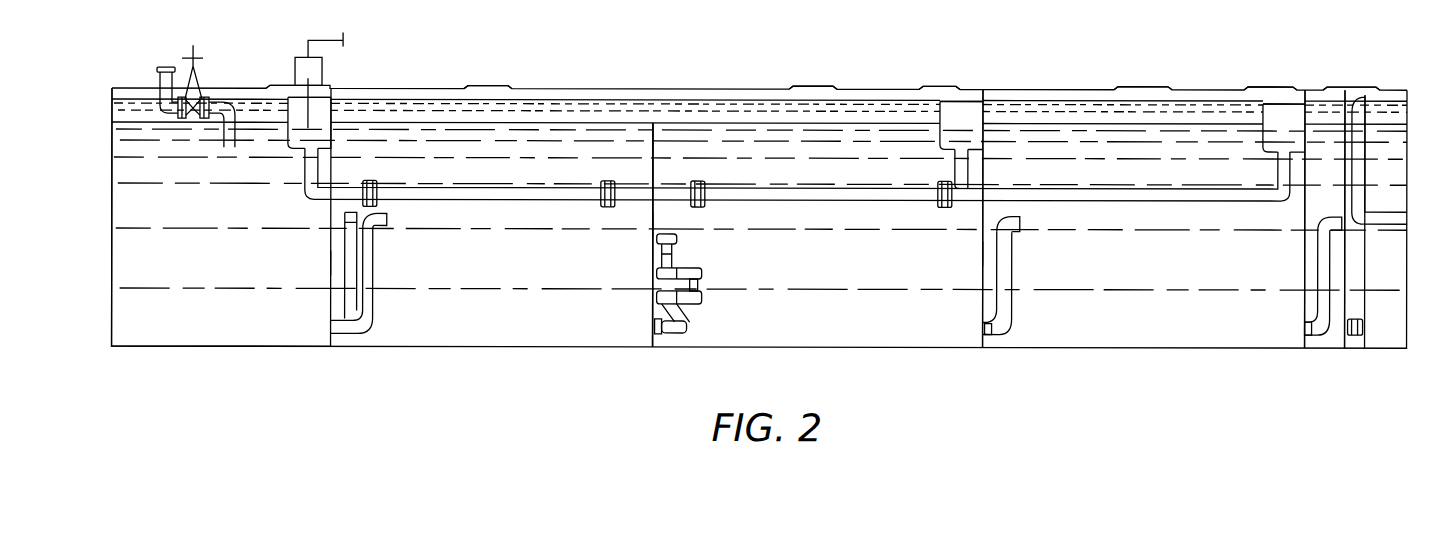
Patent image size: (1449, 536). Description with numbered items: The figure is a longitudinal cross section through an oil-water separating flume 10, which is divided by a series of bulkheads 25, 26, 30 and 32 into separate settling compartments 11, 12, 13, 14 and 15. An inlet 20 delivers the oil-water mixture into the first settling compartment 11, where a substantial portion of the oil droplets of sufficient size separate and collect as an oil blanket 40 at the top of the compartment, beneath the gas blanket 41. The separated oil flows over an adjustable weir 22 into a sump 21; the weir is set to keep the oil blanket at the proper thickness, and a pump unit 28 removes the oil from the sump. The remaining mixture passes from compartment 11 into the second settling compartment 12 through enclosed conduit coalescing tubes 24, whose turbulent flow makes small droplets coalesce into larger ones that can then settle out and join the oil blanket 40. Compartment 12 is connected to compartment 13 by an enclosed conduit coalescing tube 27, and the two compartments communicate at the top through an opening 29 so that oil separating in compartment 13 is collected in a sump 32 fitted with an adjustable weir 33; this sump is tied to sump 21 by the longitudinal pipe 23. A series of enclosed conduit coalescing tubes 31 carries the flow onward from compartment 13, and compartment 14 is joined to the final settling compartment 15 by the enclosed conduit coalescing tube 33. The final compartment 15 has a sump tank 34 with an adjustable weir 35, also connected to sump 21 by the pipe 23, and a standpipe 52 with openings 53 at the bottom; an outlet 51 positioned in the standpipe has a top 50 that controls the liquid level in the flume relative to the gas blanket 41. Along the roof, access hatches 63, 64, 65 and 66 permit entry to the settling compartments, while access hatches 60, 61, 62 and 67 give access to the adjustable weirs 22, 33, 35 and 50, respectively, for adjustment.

The flume 10 is at (1136, 361).
The first settling compartment 11 is at (222, 275).
The second settling compartment 12 is at (515, 275).
The third settling compartment 13 is at (826, 277).
The settling compartment 14 is at (1170, 275).
The final settling compartment 15 is at (1330, 172).
The inlet 20 is at (158, 80).
The sump 21 is at (288, 136).
The adjustable weir 22 is at (285, 100).
The longitudinal pipe 23 is at (419, 188).
The enclosed conduit coalescing tubes 24 is at (378, 266).
The bulkhead 25 is at (331, 263).
The bulkhead 26 is at (652, 226).
The enclosed conduit coalescing tube 27 is at (690, 263).
The pump unit 28 is at (300, 56).
The opening 29 is at (645, 113).
The bulkhead 30 is at (983, 252).
The enclosed conduit coalescing tubes 31 is at (1014, 254).
The sump 32 is at (947, 139).
The adjustable weir 33 is at (930, 110).
The sump tank 34 is at (1270, 139).
The adjustable weir 35 is at (1262, 112).
The oil blanket 40 is at (149, 116).
The gas blanket 41 is at (692, 96).
The top of outlet 50 is at (1366, 95).
The outlet 51 is at (1407, 219).
The standpipe 52 is at (1366, 152).
The openings 53 is at (1366, 326).
The access hatch 60 is at (287, 83).
The access hatch 61 is at (935, 85).
The access hatch 62 is at (1268, 85).
The access hatch 63 is at (225, 85).
The access hatch 64 is at (492, 85).
The access hatch 65 is at (818, 85).
The access hatch 66 is at (1139, 86).
The access hatch 67 is at (1362, 85).